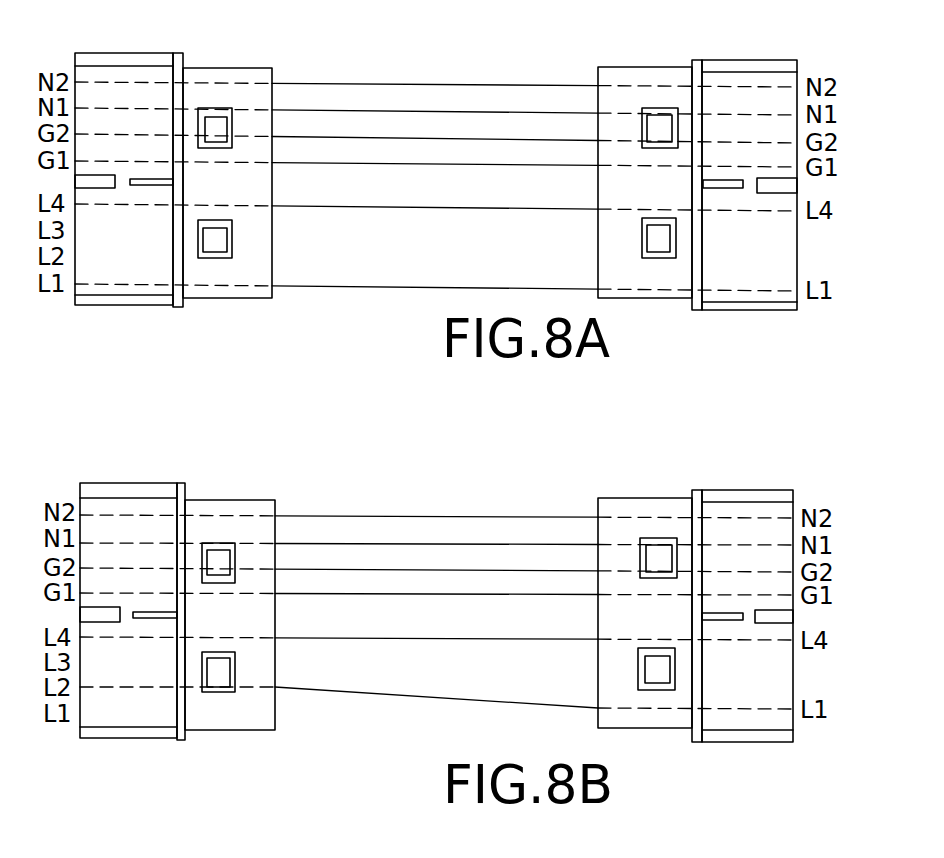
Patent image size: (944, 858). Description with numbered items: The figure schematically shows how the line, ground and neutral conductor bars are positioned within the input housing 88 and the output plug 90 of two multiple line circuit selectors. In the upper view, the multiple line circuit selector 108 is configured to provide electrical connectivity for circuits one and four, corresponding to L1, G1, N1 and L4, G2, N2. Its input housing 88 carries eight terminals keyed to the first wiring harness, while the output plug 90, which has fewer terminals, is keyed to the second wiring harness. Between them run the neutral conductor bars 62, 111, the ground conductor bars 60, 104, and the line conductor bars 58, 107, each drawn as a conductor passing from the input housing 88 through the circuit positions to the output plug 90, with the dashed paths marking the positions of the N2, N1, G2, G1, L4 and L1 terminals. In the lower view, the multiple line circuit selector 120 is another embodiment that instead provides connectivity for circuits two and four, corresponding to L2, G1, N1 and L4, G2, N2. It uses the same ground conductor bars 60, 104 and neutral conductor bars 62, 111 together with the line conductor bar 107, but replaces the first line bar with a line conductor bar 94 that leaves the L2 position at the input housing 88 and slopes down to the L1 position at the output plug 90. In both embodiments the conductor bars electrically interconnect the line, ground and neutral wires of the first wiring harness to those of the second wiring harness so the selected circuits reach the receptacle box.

In FIG. 8A, the input housing 88 is at (127, 53).
In FIG. 8B, the input housing 88 is at (127, 483).
In FIG. 8A, the output plug 90 is at (725, 60).
In FIG. 8B, the output plug 90 is at (737, 490).
In FIG. 8A, the multiple line circuit selector 108 is at (507, 58).
In FIG. 8B, the multiple line circuit selector 120 is at (440, 504).
In FIG. 8A, the neutral conductor bar 111 is at (432, 82).
In FIG. 8B, the neutral conductor bar 111 is at (513, 515).
In FIG. 8A, the neutral conductor bar 62 is at (447, 110).
In FIG. 8B, the neutral conductor bar 62 is at (500, 543).
In FIG. 8A, the ground conductor bar 104 is at (450, 137).
In FIG. 8B, the ground conductor bar 104 is at (487, 568).
In FIG. 8A, the ground conductor bar 60 is at (450, 163).
In FIG. 8B, the ground conductor bar 60 is at (483, 593).
In FIG. 8A, the line conductor bar 107 is at (457, 206).
In FIG. 8B, the line conductor bar 107 is at (468, 638).
In FIG. 8A, the line conductor bar 58 is at (455, 287).
In FIG. 8B, the line conductor bar 94 is at (450, 698).